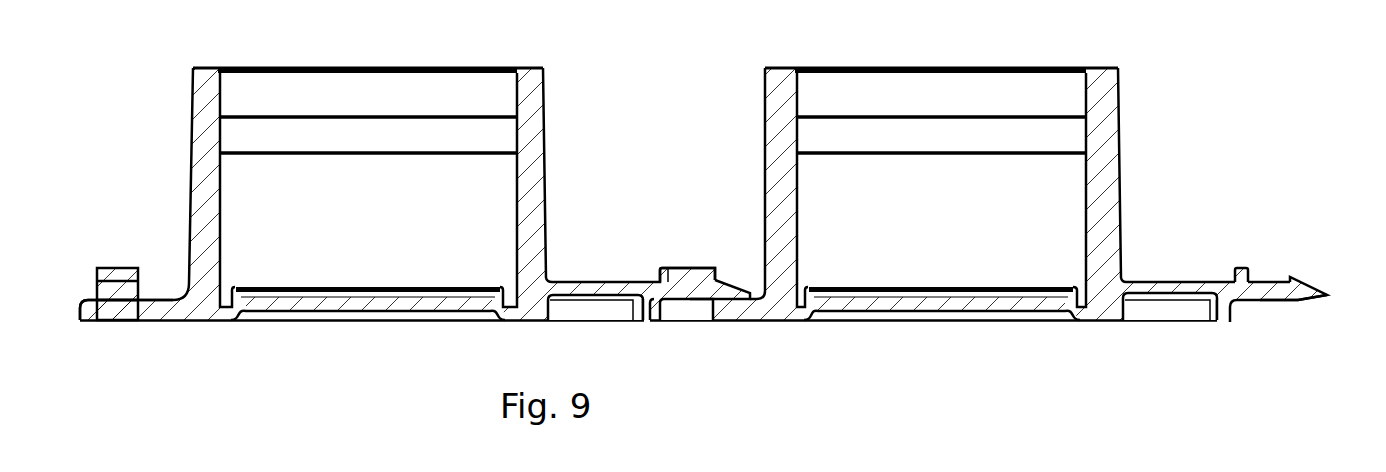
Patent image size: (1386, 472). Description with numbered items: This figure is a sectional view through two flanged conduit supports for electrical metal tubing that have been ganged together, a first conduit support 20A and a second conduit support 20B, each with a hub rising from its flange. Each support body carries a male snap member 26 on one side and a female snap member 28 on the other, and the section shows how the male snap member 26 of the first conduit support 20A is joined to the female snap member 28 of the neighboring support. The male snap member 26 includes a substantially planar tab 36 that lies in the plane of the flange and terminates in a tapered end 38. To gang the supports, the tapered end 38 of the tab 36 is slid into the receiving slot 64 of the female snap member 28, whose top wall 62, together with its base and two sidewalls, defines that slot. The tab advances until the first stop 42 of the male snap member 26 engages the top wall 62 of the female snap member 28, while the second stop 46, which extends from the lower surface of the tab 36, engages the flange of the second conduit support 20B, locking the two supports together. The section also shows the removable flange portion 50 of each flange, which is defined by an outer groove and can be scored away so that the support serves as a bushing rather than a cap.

The first conduit support 20A is at (388, 68).
The second conduit support 20B is at (955, 68).
The male snap member 26 is at (613, 280).
The female snap member 28 is at (112, 243).
The tab 36 is at (1280, 292).
The tapered end 38 is at (736, 284).
The first stop 42 is at (663, 268).
The second stop 46 is at (645, 312).
The removable flange portion 50 is at (303, 305).
The top wall 62 is at (694, 274).
The receiving slot 64 is at (117, 290).